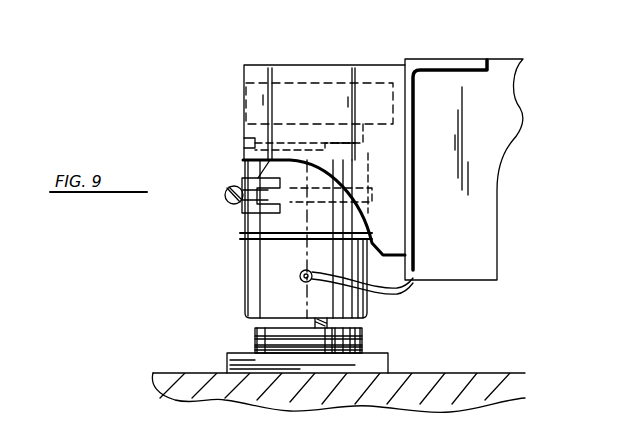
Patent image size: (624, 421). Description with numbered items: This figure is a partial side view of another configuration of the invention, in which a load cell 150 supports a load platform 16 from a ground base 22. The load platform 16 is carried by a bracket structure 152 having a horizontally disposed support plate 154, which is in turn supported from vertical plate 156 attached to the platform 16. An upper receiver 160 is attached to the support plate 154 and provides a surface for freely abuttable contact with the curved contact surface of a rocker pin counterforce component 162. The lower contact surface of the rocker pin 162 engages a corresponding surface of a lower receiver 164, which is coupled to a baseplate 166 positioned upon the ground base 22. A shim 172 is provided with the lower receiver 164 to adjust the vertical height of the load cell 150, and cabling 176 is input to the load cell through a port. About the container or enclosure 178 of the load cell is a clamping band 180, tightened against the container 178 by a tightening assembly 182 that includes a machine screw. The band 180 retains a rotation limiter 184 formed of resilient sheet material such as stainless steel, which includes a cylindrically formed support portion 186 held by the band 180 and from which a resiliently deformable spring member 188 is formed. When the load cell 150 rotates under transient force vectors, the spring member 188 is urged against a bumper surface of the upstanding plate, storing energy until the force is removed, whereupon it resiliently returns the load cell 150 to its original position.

The load platform 16 is at (497, 133).
The ground base 22 is at (482, 372).
The load cell 150 is at (240, 282).
The bracket structure 152 is at (378, 57).
The support plate 154 is at (252, 84).
The vertical plate 156 is at (333, 73).
The upper receiver 160 is at (265, 135).
The rocker pin counterforce component 162 is at (242, 150).
The lower receiver 164 is at (362, 342).
The baseplate 166 is at (390, 365).
The shim 172 is at (250, 345).
The cabling 176 is at (395, 290).
The container 178 is at (267, 263).
The clamping band 180 is at (267, 200).
The tightening assembly 182 is at (224, 197).
The rotation limiter 184 is at (183, 216).
The cylindrically formed support portion 186 is at (242, 227).
The spring member 188 is at (242, 172).